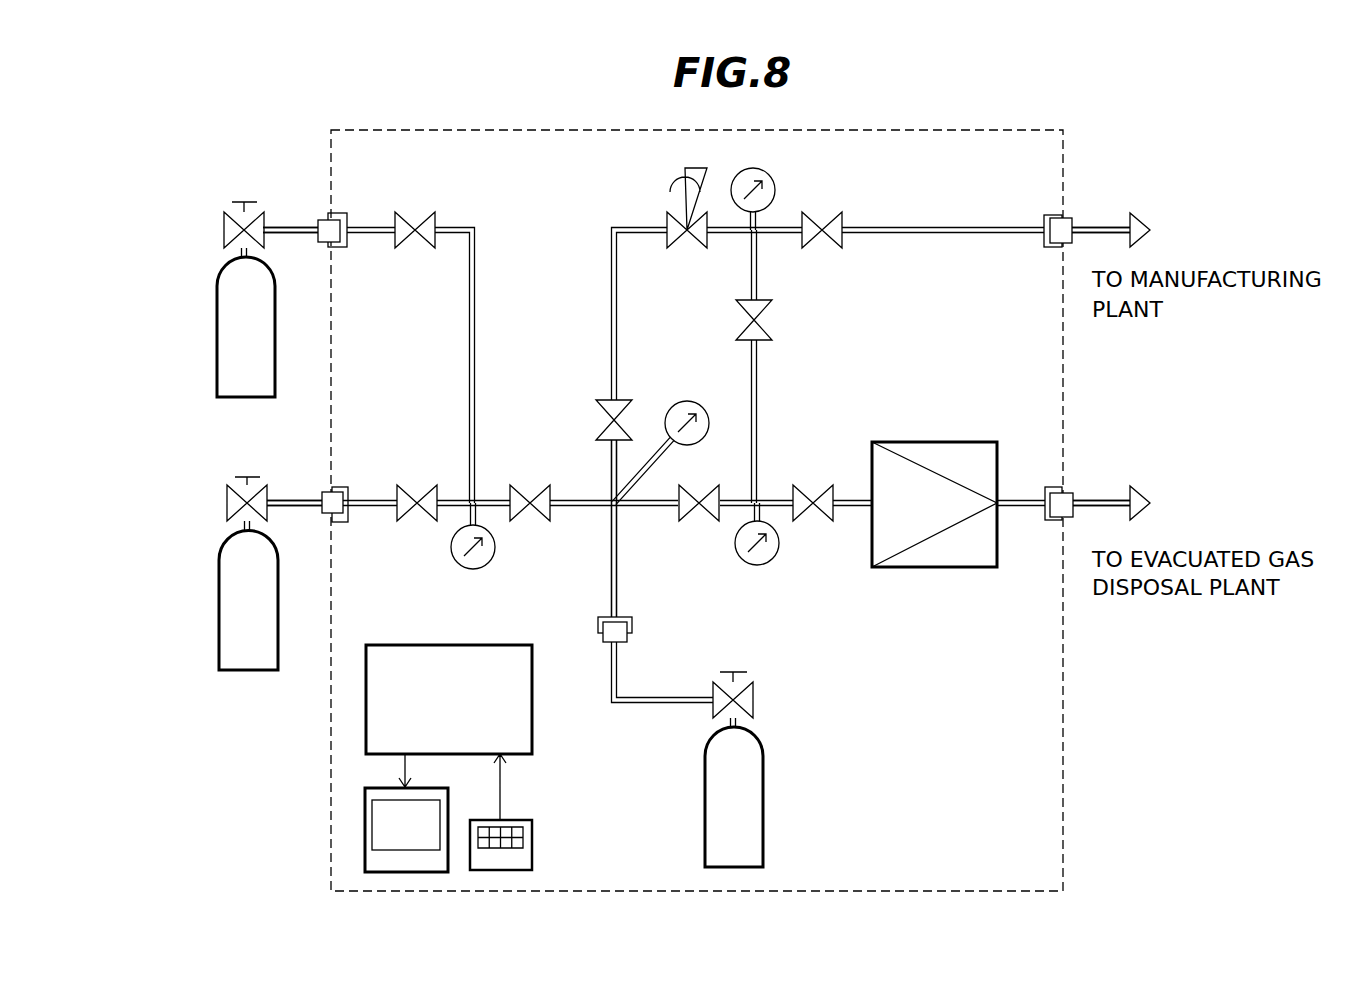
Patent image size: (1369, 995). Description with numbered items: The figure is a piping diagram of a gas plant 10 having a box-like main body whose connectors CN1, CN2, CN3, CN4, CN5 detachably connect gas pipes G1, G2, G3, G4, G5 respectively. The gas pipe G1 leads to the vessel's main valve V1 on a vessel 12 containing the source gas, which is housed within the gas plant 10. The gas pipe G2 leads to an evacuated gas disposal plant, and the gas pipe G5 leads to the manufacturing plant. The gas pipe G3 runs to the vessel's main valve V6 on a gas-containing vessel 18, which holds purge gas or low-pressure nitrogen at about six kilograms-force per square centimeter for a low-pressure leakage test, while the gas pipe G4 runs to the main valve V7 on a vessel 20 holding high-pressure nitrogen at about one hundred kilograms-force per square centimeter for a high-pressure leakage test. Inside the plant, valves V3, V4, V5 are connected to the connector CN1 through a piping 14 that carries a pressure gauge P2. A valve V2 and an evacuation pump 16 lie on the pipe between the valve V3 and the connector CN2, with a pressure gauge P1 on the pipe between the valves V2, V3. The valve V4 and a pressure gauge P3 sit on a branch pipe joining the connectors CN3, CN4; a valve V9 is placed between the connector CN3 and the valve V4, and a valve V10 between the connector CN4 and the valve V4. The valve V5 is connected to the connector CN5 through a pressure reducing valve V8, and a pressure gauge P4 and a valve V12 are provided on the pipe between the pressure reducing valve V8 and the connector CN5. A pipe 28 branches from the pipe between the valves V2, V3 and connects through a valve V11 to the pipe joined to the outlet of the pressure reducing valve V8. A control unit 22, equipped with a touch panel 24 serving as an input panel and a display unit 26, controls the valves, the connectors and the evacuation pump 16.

The gas plant 10 is at (1063, 793).
The vessel 12 is at (763, 805).
The piping 14 is at (611, 560).
The evacuation pump 16 is at (957, 568).
The gas-containing vessel 18 is at (218, 332).
The gas-containing vessel 20 is at (219, 610).
The control unit 22 is at (366, 697).
The touch panel 24 is at (532, 838).
The display unit 26 is at (365, 828).
The pipe 28 is at (758, 403).
The valve V1 is at (753, 697).
The valve V2 is at (818, 521).
The valve V3 is at (708, 521).
The valve V4 is at (537, 521).
The valve V5 is at (634, 405).
The LP nitrogen cylinder valve V6 is at (225, 230).
The valve V7 is at (227, 503).
The pressure reducing valve V8 is at (665, 220).
The valve V9 is at (400, 213).
The valve V10 is at (418, 518).
The valve V11 is at (773, 320).
The valve V12 is at (855, 220).
The pressure gauge P1 is at (760, 566).
The pressure gauge P2 is at (700, 405).
The pressure gauge P3 is at (485, 567).
The pressure gauge P4 is at (773, 173).
The connector CN1 is at (632, 624).
The connector CN2 is at (1067, 492).
The connector CN3 is at (325, 215).
The connector CN4 is at (331, 490).
The connector CN5 is at (1067, 220).
The gas pipe G1 is at (645, 705).
The gas pipe G2 is at (1107, 497).
The gas pipe G3 is at (289, 235).
The gas pipe G4 is at (292, 510).
The gas pipe G5 is at (1103, 227).